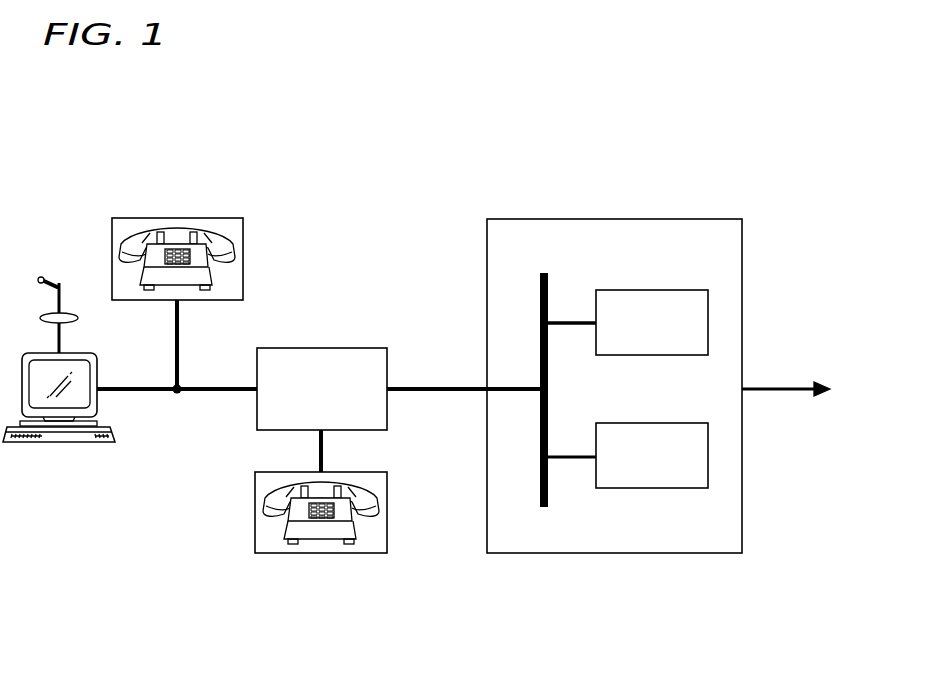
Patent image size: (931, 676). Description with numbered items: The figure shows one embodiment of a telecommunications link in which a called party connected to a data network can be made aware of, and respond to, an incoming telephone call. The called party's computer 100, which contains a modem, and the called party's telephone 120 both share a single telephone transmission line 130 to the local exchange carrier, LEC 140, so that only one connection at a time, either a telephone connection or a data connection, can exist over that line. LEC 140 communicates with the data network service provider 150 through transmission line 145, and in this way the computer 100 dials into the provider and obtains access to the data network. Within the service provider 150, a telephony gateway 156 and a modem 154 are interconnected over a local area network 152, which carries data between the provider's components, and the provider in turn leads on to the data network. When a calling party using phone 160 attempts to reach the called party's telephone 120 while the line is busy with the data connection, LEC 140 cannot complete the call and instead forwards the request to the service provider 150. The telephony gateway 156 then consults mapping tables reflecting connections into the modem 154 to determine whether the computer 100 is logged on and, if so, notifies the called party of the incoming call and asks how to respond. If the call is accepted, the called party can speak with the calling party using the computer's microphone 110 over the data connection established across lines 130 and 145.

The computer 100 is at (57, 446).
The microphone 110 is at (59, 283).
The telephone 120 is at (180, 216).
The telephone transmission line 130 is at (153, 393).
The LEC 140 is at (324, 346).
The transmission line 145 is at (441, 386).
The data network service provider 150 is at (616, 217).
The local area network 152 is at (548, 423).
The modem 154 is at (655, 289).
The telephony gateway 156 is at (650, 490).
The calling party's phone 160 is at (388, 515).